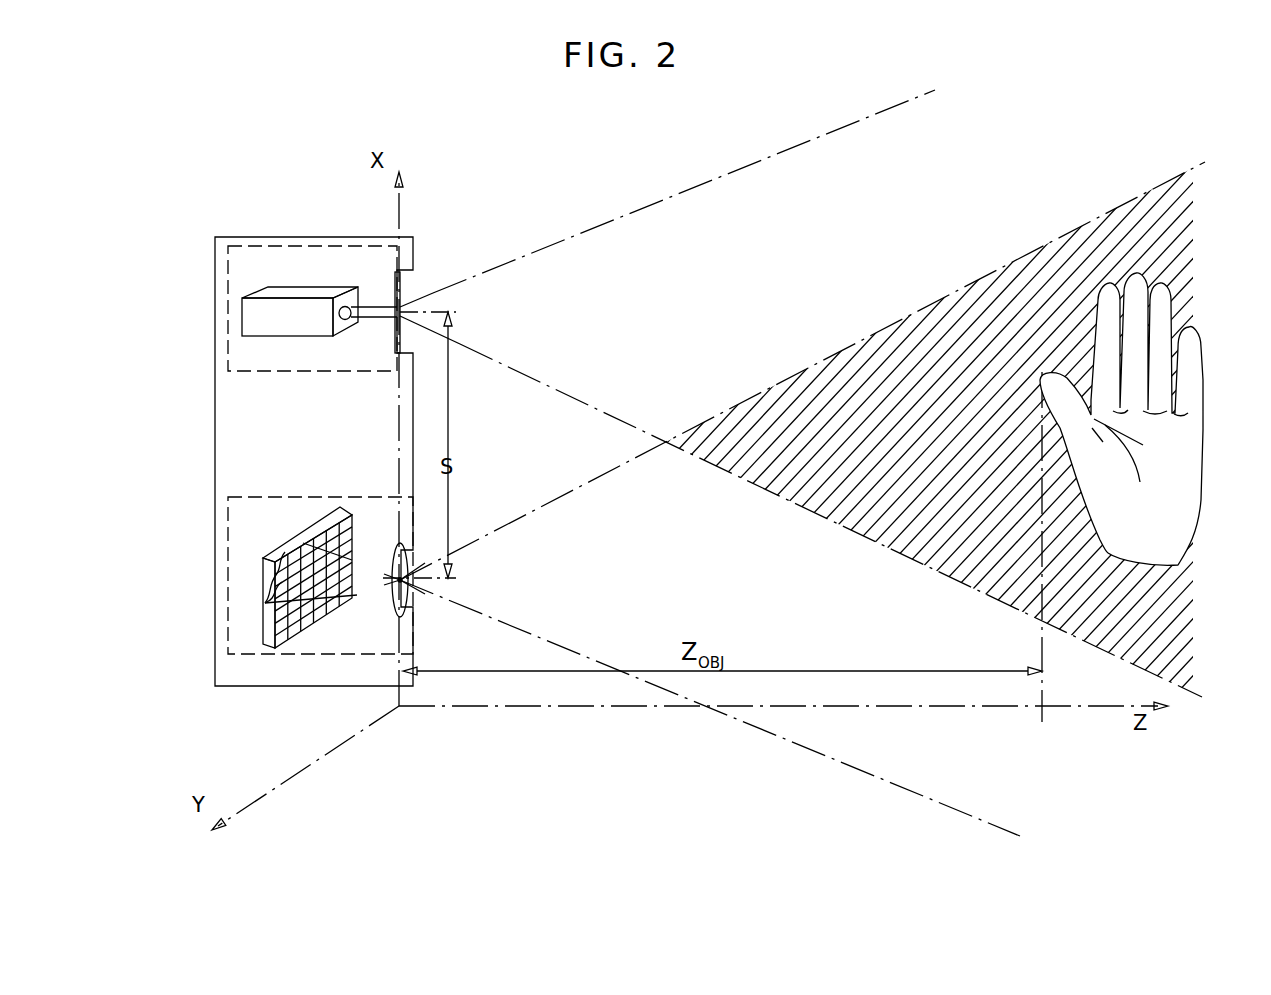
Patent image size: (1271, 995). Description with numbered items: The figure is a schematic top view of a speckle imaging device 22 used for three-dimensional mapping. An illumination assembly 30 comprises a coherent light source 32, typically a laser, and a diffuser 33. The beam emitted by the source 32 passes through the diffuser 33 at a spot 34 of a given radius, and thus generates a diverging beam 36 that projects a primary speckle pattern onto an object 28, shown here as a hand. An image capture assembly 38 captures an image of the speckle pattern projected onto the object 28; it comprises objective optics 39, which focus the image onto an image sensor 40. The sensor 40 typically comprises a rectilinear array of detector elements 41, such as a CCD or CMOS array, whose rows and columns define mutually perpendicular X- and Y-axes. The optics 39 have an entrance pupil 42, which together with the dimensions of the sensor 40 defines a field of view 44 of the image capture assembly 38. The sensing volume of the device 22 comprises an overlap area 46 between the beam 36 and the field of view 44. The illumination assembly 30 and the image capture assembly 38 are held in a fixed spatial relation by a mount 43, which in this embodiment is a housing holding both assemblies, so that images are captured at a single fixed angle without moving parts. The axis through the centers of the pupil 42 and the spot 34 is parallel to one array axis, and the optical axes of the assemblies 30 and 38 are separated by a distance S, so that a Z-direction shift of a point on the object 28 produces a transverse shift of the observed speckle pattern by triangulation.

The device 22 is at (214, 151).
The object 28 is at (1188, 340).
The illumination assembly 30 is at (262, 372).
The coherent light source 32 is at (288, 297).
The diffuser 33 is at (393, 347).
The spot 34 is at (402, 307).
The diverging beam 36 is at (767, 158).
The image capture assembly 38 is at (330, 496).
The objective optics 39 is at (395, 557).
The image sensor 40 is at (297, 544).
The detector elements 41 is at (294, 579).
The entrance pupil 42 is at (408, 592).
The mount 43 is at (285, 237).
The field of view 44 is at (545, 503).
The overlap area 46 is at (921, 419).